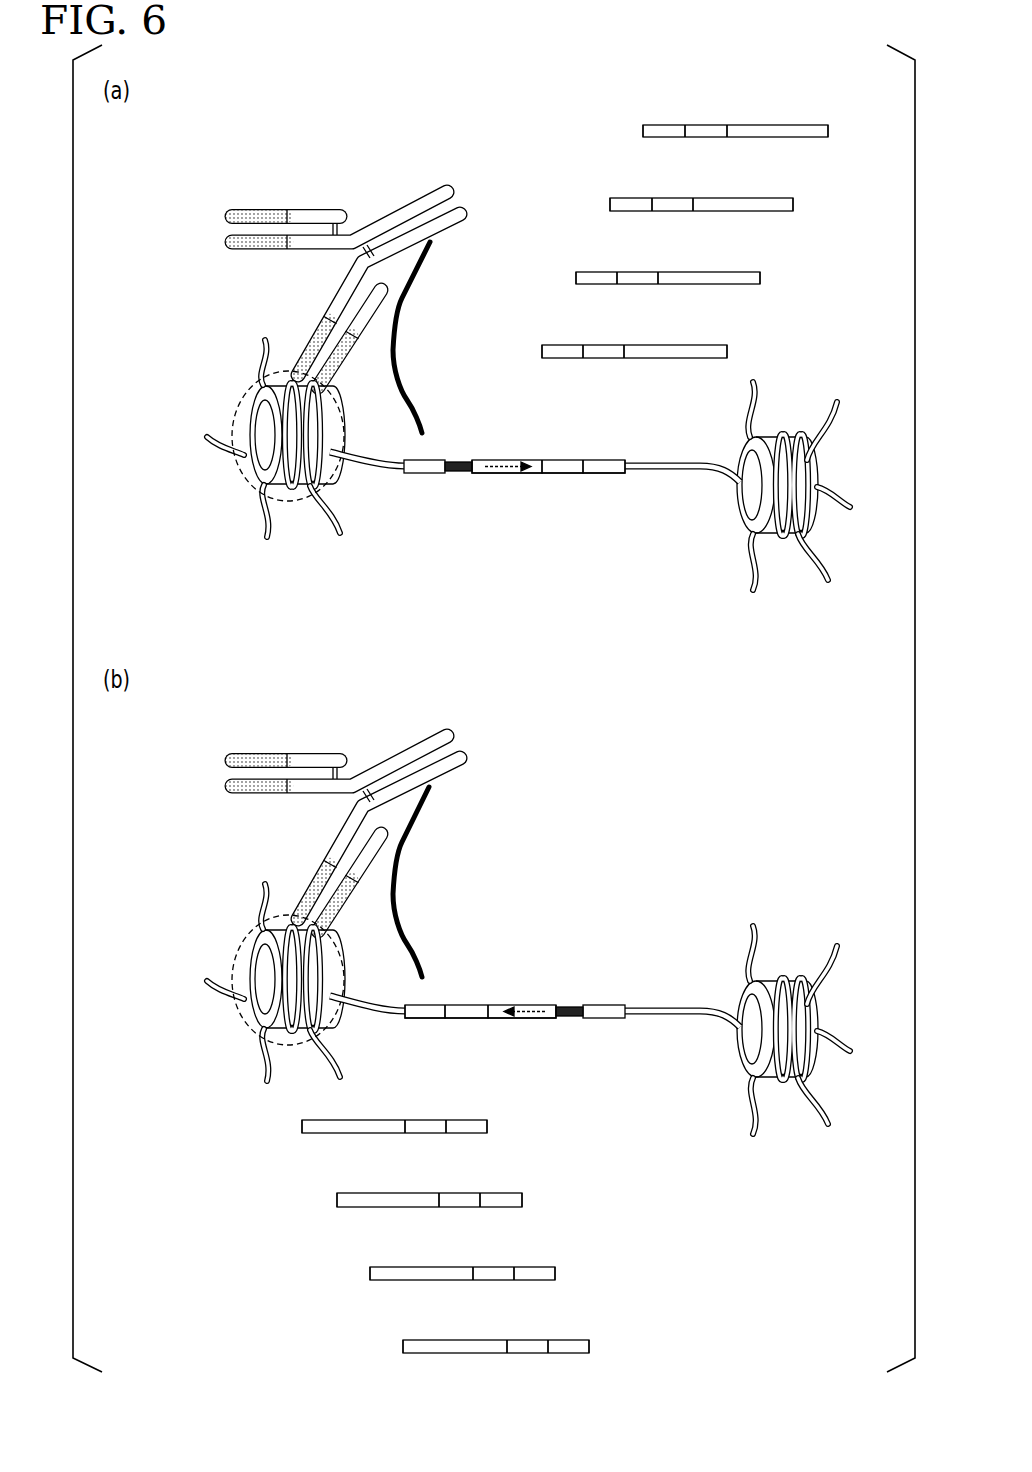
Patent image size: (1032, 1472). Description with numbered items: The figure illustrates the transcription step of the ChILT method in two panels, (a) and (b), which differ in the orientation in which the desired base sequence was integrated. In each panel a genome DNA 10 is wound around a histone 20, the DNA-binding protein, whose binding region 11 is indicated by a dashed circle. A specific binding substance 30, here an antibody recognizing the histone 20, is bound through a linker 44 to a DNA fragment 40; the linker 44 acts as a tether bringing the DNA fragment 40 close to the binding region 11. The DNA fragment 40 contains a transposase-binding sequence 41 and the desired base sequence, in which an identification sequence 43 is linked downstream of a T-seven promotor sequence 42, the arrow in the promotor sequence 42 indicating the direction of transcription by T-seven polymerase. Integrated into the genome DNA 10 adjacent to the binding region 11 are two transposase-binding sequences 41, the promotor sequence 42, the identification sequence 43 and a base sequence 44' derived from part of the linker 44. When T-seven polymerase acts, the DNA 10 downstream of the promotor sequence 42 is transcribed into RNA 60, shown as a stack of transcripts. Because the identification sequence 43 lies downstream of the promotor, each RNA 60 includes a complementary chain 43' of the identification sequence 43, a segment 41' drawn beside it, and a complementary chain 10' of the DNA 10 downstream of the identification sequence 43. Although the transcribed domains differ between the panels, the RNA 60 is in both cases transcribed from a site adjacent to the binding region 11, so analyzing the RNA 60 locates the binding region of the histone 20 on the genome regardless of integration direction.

The genome DNA 10 is at (535, 739).
The complementary chain of DNA 10' is at (565, 710).
The binding region 11 is at (285, 502).
The histone 20 is at (262, 433).
The specific binding substance 30 is at (400, 207).
The DNA fragment 40 is at (639, 547).
The transposase-binding sequence 41 is at (529, 739).
The first region copy 41' is at (567, 710).
The T7 promotor sequence 42 is at (512, 475).
The identification sequence 43 is at (514, 739).
The complementary chain of the identification sequence 43' is at (565, 710).
The linker 44 is at (452, 609).
The base sequence derived from part of the linker 44' is at (531, 739).
The RNA 60 is at (847, 116).